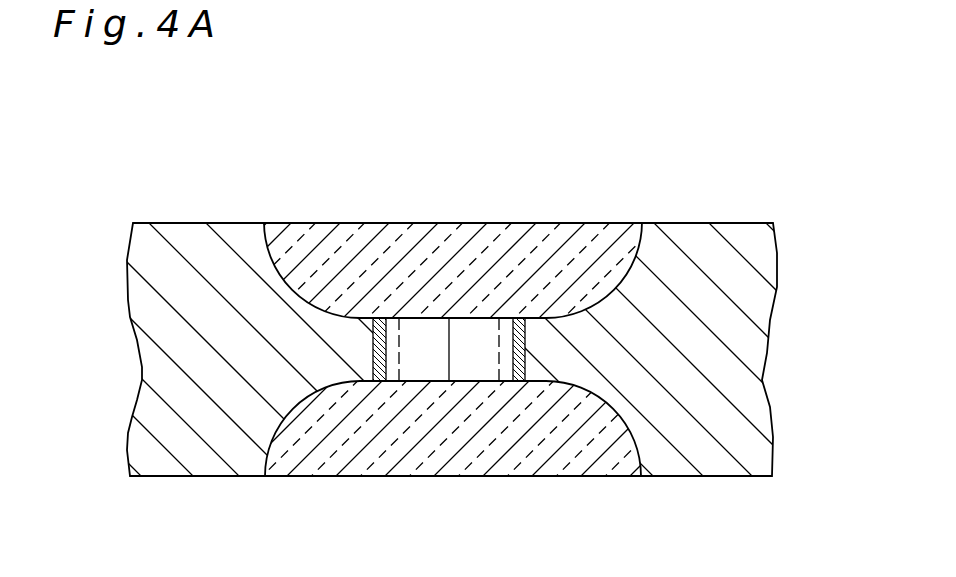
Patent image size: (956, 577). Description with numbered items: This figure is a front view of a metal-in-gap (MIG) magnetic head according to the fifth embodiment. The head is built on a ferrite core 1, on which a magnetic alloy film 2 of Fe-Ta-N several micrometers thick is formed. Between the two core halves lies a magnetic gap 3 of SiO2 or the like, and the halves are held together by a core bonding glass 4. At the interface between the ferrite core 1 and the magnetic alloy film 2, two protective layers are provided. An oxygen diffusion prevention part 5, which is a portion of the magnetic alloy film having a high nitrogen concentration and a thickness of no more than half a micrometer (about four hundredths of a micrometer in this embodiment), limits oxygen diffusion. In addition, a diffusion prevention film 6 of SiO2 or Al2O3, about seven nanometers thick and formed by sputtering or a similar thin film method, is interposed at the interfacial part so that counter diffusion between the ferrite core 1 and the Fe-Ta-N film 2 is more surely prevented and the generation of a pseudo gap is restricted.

The ferrite core 1 is at (749, 326).
The magnetic alloy film 2 is at (490, 327).
The magnetic gap 3 is at (456, 330).
The core bonding glass 4 is at (325, 240).
The oxygen diffusion prevention part 5 is at (393, 325).
The diffusion prevention film 6 is at (517, 317).